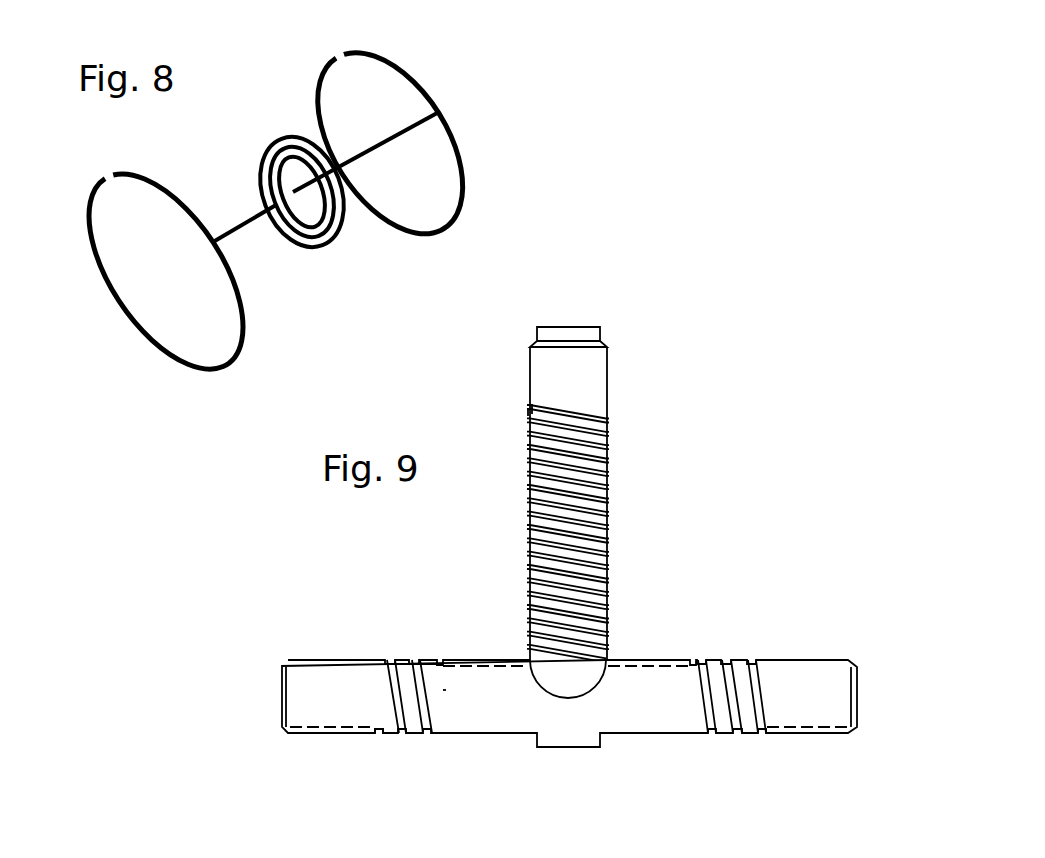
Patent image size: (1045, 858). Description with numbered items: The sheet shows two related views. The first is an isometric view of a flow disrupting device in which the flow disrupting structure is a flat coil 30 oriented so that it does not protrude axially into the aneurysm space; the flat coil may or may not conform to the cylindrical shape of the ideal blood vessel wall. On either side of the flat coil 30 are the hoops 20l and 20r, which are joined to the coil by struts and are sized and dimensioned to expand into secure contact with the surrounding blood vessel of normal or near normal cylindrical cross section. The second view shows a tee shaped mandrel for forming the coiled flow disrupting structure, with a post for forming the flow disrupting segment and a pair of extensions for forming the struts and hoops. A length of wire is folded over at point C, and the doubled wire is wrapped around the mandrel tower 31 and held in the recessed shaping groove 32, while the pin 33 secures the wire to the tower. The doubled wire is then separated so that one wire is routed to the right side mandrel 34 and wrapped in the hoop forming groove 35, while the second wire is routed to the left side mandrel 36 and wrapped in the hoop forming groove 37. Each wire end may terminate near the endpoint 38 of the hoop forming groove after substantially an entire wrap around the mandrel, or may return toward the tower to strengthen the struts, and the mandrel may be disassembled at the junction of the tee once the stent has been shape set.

In FIG. 8, the hoop 20l is at (110, 294).
In FIG. 8, the hoop 20r is at (397, 62).
In FIG. 8, the flat coil 30 is at (258, 144).
In FIG. 9, the mandrel tower 31 is at (607, 512).
In FIG. 9, the recessed shaping groove 32 is at (580, 400).
In FIG. 9, the pin 33 is at (530, 408).
In FIG. 9, the fold point C is at (528, 410).
In FIG. 9, the right side mandrel 34 is at (670, 718).
In FIG. 9, the hoop forming groove 35 is at (713, 713).
In FIG. 9, the left side mandrel 36 is at (447, 690).
In FIG. 9, the hoop forming groove 37 is at (427, 708).
In FIG. 9, the endpoint 38 is at (398, 733).